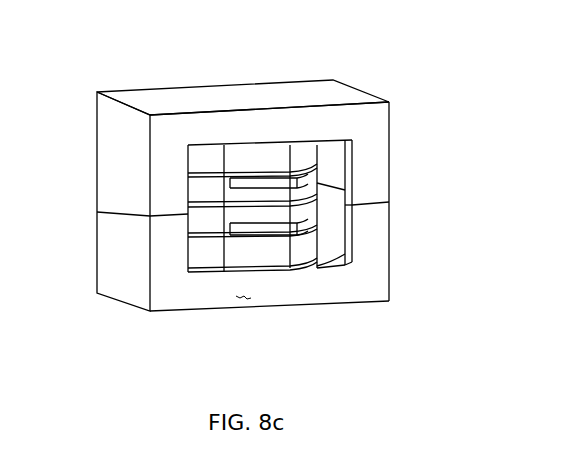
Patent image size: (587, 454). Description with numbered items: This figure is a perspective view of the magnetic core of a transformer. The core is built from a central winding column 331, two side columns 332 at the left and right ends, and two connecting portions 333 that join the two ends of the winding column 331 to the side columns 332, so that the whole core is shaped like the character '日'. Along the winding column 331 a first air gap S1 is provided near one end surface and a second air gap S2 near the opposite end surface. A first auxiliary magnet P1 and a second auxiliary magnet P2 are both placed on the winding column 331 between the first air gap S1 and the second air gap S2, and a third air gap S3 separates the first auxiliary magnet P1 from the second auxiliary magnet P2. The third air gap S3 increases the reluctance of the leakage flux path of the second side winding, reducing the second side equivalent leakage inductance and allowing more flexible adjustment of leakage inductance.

The winding column 331 is at (253, 207).
The side column 332 is at (165, 200).
The connecting portion 333 is at (237, 120).
The first air gap S1 is at (198, 175).
The second air gap S2 is at (218, 233).
The third air gap S3 is at (310, 202).
The first auxiliary magnet P1 is at (277, 178).
The second auxiliary magnet P2 is at (268, 227).